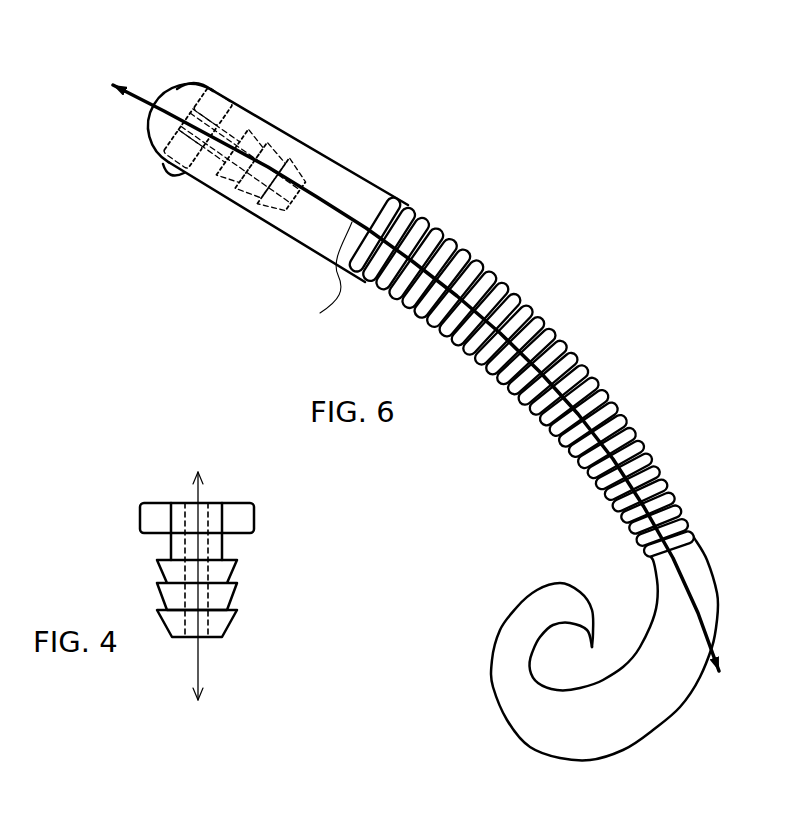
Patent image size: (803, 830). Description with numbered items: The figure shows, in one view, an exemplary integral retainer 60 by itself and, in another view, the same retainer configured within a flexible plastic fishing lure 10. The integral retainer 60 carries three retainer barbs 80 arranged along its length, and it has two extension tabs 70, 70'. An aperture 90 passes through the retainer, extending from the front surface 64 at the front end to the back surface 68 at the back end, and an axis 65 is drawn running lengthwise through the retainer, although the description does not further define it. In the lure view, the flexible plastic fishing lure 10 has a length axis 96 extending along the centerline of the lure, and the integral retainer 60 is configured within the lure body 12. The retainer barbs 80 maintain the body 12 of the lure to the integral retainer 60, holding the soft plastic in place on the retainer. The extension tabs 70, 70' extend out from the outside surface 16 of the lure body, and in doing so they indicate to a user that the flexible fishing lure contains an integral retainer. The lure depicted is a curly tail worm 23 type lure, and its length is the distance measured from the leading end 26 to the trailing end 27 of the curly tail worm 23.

In FIG. 6, the flexible plastic fishing lure 10 is at (507, 215).
In FIG. 6, the lure body 12 is at (307, 224).
In FIG. 6, the outside surface 16 is at (306, 144).
In FIG. 6, the curly tail worm 23 is at (357, 193).
In FIG. 6, the leading end 26 is at (172, 92).
In FIG. 6, the trailing end 27 is at (593, 645).
In FIG. 6, the integral retainer 60 is at (229, 131).
In FIG. 4, the integral retainer 60 is at (139, 502).
In FIG. 4, the front surface 64 is at (200, 477).
In FIG. 4, the longitudinal axis 65 is at (229, 589).
In FIG. 4, the back surface 68 is at (177, 658).
In FIG. 6, the extension tab 70 is at (214, 70).
In FIG. 4, the extension tab 70 is at (149, 500).
In FIG. 6, the extension tab 70' is at (159, 182).
In FIG. 4, the extension tab 70' is at (267, 531).
In FIG. 6, the retainer barbs 80 is at (247, 187).
In FIG. 4, the retainer barbs 80 is at (229, 585).
In FIG. 4, the aperture 90 is at (200, 519).
In FIG. 6, the length axis 96 is at (131, 93).